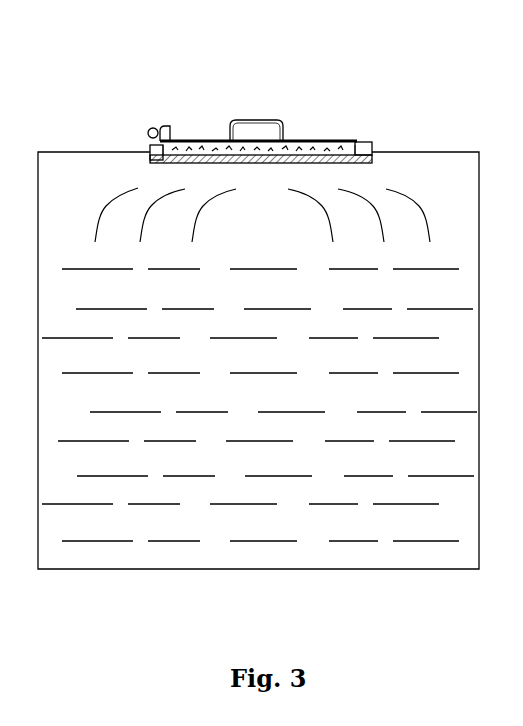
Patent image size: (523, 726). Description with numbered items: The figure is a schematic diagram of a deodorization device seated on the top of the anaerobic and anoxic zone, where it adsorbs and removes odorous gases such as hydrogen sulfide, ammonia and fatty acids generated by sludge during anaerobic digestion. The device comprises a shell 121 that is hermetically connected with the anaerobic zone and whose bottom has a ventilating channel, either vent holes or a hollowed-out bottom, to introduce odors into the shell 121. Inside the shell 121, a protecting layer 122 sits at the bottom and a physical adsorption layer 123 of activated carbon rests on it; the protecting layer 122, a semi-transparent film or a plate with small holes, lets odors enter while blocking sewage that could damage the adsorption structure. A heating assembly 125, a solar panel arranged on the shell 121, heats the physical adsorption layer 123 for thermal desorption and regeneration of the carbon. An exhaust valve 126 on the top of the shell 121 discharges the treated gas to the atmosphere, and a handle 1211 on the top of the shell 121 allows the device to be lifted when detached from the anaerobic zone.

The shell 121 is at (143, 141).
The protecting layer 122 is at (353, 141).
The physical adsorption layer 123 is at (309, 146).
The heating assembly 125 is at (303, 137).
The handle 1211 is at (252, 119).
The exhaust valve 126 is at (153, 126).